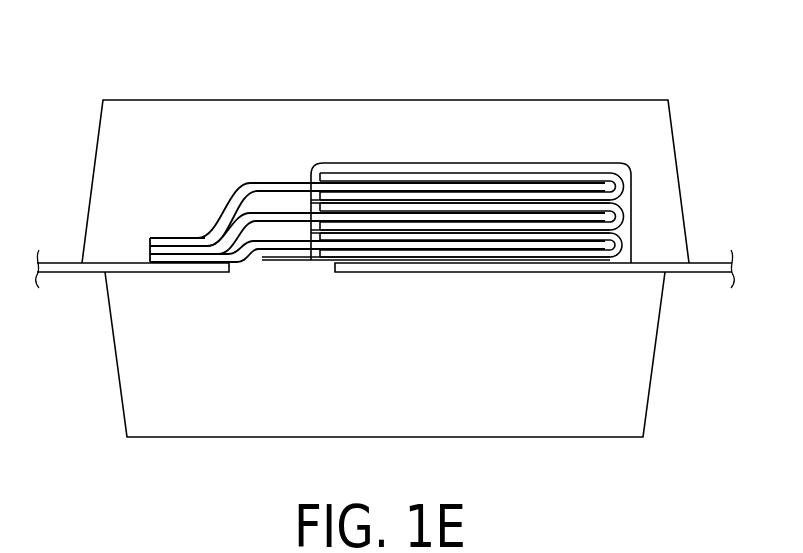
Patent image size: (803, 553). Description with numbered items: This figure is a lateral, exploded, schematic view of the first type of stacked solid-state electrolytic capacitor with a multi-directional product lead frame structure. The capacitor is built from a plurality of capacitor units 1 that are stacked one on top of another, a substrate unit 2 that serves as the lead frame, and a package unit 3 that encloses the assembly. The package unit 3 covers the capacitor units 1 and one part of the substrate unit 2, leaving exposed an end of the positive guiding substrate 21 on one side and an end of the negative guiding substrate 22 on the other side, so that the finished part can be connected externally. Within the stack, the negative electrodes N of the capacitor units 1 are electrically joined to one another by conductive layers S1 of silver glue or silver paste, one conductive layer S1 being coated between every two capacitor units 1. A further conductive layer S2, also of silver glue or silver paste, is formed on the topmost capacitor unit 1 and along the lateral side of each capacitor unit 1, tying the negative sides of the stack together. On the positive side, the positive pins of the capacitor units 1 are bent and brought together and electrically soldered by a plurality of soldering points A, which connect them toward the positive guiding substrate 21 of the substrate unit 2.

The capacitor unit 1 is at (266, 233).
The substrate unit 2 is at (386, 323).
The positive guiding substrate 21 is at (67, 270).
The negative guiding substrate 22 is at (702, 270).
The package unit 3 is at (608, 96).
The soldering point A is at (170, 237).
The negative electrode N is at (506, 185).
The conductive layer S1 is at (383, 258).
The conductive layer S2 is at (642, 198).